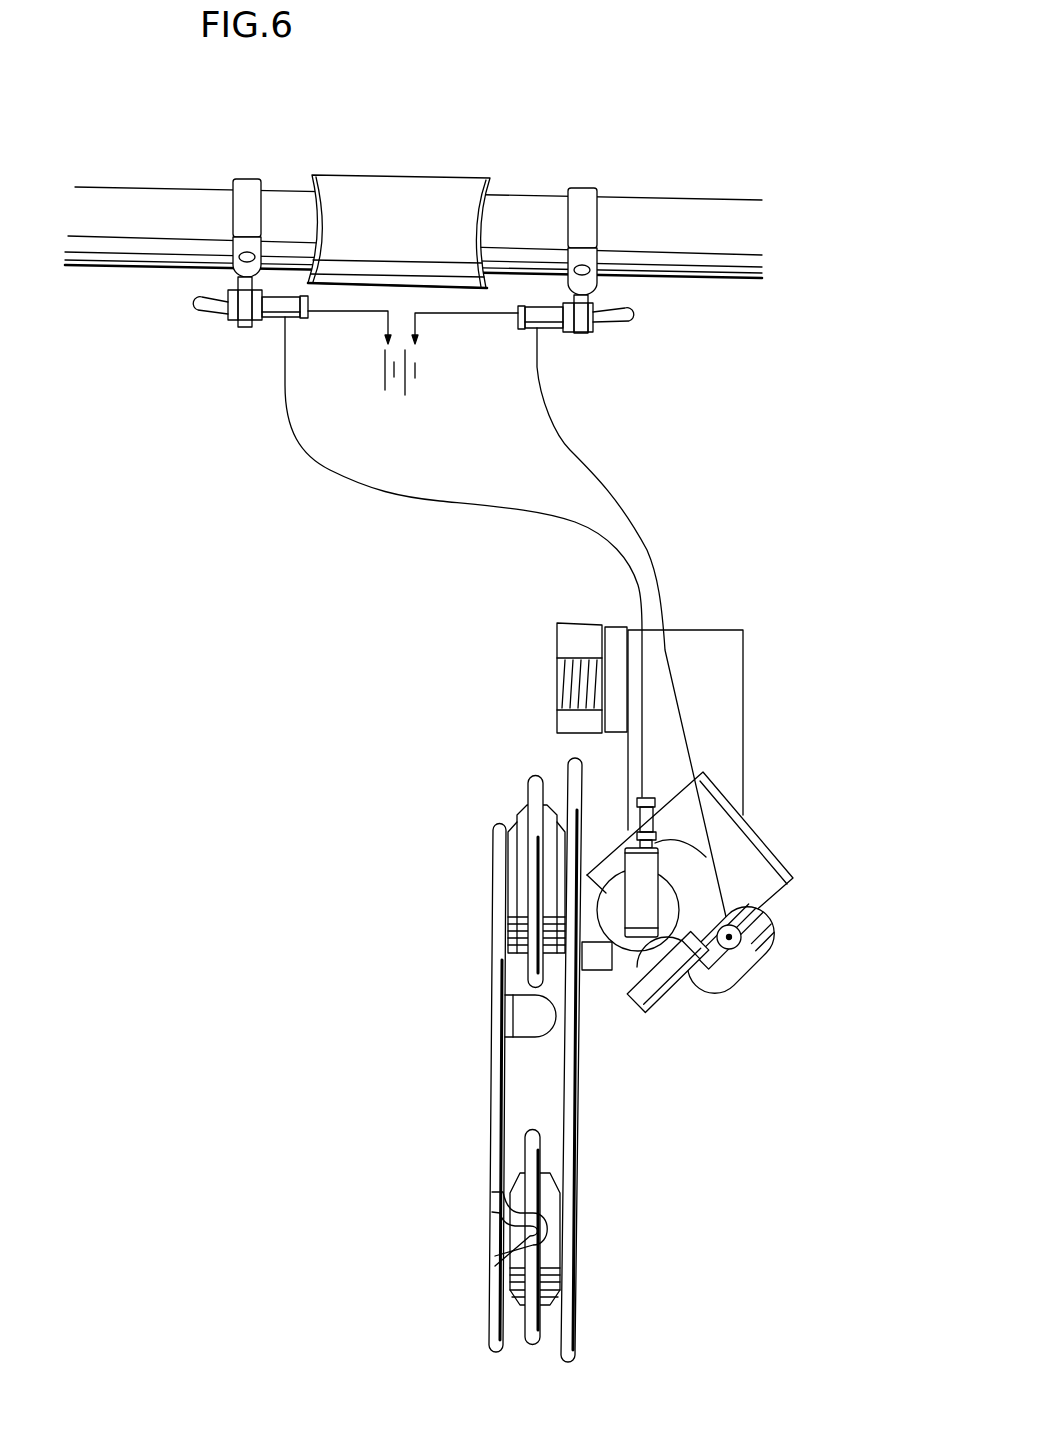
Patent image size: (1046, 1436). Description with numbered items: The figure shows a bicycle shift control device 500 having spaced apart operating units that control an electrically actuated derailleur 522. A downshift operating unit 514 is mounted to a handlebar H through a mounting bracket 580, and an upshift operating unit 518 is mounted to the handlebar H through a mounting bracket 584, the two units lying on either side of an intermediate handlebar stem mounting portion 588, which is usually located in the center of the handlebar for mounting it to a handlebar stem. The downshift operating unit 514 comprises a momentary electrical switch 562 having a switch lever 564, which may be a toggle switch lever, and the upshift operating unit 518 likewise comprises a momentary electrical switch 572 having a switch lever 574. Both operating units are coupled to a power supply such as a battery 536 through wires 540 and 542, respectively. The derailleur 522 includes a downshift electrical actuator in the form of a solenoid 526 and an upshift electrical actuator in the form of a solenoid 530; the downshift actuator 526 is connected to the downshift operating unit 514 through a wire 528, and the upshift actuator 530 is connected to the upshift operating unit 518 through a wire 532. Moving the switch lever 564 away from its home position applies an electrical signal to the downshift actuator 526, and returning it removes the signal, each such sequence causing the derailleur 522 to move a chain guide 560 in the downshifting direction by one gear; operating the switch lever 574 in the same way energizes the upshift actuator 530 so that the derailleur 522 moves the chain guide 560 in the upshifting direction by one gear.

The handlebar H is at (148, 195).
The mounting bracket 580 is at (249, 188).
The intermediate handlebar stem mounting portion 588 is at (383, 192).
The mounting bracket 584 is at (578, 190).
The switch lever 564 is at (183, 298).
The downshift operating unit 514 is at (249, 337).
The momentary electrical switch 562 is at (273, 322).
The wire 540 is at (333, 313).
The battery 536 is at (374, 372).
The wire 542 is at (447, 315).
The momentary electrical switch 572 is at (527, 327).
The upshift operating unit 518 is at (556, 336).
The switch lever 574 is at (638, 316).
The wire 528 is at (452, 557).
The wire 532 is at (593, 475).
The bicycle shift control device 500 is at (250, 578).
The electrically actuated derailleur 522 is at (735, 708).
The chain guide 560 is at (497, 943).
The downshift electrical actuator 526 is at (632, 947).
The upshift electrical actuator 530 is at (760, 960).